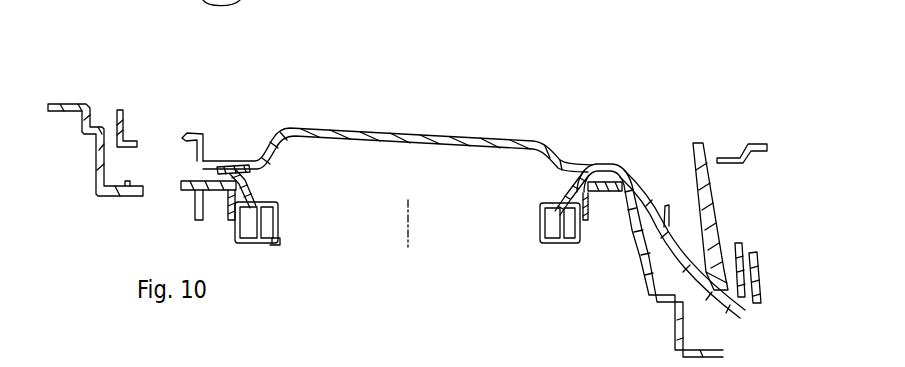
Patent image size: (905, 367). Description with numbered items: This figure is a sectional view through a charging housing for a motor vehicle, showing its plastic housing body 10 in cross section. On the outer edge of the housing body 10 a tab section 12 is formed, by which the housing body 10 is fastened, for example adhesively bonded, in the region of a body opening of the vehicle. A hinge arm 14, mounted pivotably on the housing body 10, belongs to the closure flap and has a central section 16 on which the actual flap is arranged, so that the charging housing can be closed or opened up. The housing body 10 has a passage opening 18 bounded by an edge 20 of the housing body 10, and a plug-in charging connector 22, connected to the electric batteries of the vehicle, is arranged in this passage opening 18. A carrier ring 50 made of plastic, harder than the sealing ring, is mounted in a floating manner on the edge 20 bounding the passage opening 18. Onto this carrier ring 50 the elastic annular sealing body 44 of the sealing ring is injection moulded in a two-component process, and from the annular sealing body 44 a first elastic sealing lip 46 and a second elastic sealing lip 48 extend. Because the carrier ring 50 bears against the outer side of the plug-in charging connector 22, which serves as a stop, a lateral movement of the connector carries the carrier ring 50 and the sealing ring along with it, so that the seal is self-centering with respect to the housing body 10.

The housing body 10 is at (645, 275).
The tab section 12 is at (60, 103).
The hinge arm 14 is at (721, 278).
The central section 16 is at (407, 140).
The passage opening 18 is at (363, 230).
The edge 20 is at (600, 192).
The plug-in charging connector 22 is at (552, 244).
The annular sealing body 44 is at (230, 183).
The first elastic sealing lip 46 is at (243, 193).
The second elastic sealing lip 48 is at (237, 167).
The carrier ring 50 is at (590, 222).